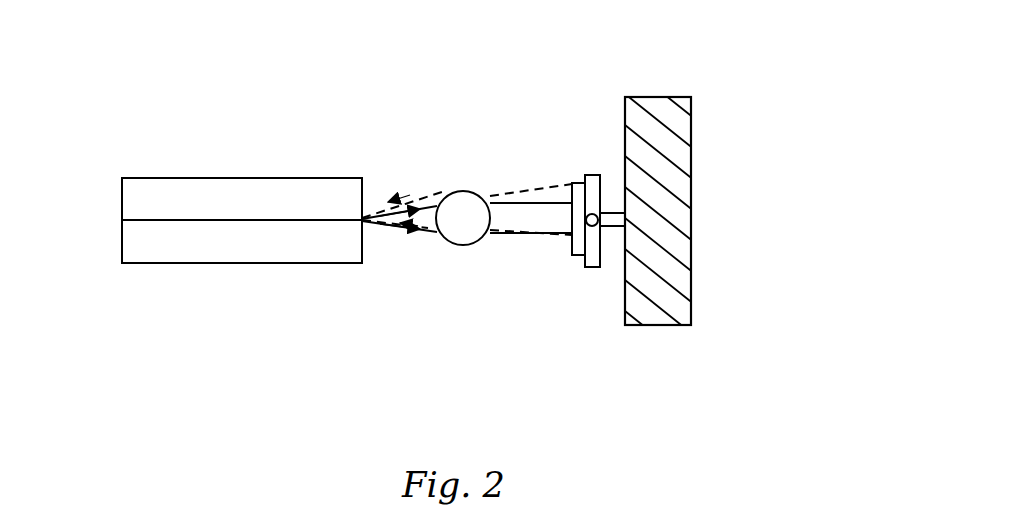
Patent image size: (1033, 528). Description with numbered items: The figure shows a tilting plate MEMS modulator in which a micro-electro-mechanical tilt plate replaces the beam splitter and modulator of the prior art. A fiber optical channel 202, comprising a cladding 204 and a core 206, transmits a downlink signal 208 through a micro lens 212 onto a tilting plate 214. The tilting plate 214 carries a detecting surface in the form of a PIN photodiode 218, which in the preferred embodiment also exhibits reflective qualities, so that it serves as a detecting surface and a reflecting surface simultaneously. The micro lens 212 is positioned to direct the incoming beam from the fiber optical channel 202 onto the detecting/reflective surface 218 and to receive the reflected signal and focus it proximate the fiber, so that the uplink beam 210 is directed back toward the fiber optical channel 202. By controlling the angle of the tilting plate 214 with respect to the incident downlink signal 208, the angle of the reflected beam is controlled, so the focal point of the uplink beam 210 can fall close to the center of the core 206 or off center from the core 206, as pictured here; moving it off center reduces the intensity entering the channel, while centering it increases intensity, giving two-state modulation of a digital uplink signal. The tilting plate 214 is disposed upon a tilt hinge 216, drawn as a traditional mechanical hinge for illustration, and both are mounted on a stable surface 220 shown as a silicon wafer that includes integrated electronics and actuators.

The fiber optical channel 202 is at (147, 153).
The cladding 204 is at (162, 188).
The core 206 is at (238, 220).
The downlink signal 208 is at (403, 238).
The uplink beam 210 is at (427, 187).
The micro lens 212 is at (463, 249).
The tilting plate 214 is at (582, 265).
The tilt hinge 216 is at (600, 230).
The PIN photodiode 218 is at (567, 182).
The stable surface 220 is at (693, 222).